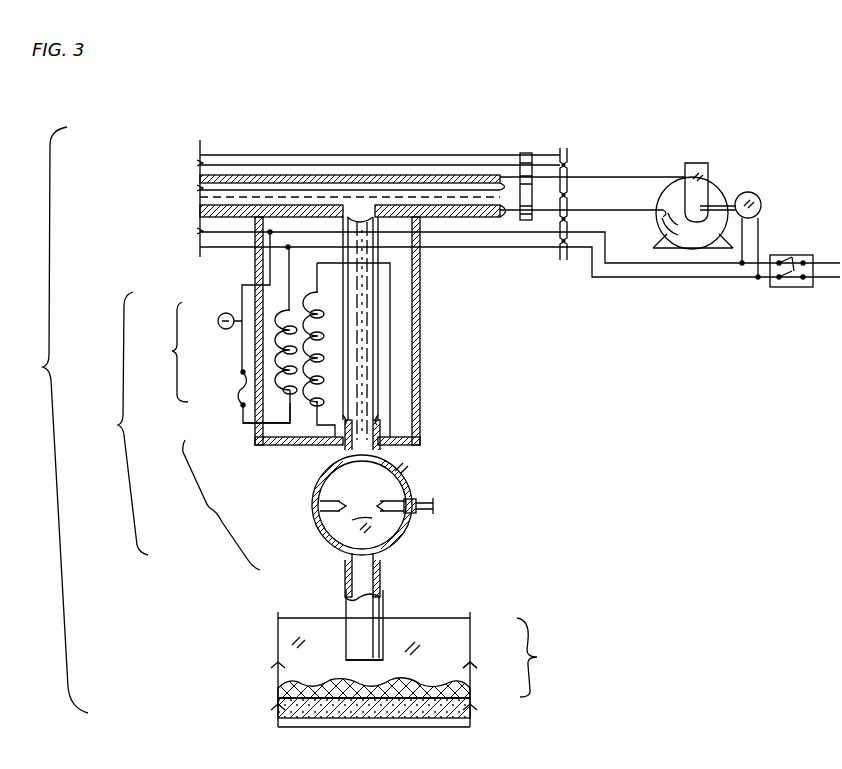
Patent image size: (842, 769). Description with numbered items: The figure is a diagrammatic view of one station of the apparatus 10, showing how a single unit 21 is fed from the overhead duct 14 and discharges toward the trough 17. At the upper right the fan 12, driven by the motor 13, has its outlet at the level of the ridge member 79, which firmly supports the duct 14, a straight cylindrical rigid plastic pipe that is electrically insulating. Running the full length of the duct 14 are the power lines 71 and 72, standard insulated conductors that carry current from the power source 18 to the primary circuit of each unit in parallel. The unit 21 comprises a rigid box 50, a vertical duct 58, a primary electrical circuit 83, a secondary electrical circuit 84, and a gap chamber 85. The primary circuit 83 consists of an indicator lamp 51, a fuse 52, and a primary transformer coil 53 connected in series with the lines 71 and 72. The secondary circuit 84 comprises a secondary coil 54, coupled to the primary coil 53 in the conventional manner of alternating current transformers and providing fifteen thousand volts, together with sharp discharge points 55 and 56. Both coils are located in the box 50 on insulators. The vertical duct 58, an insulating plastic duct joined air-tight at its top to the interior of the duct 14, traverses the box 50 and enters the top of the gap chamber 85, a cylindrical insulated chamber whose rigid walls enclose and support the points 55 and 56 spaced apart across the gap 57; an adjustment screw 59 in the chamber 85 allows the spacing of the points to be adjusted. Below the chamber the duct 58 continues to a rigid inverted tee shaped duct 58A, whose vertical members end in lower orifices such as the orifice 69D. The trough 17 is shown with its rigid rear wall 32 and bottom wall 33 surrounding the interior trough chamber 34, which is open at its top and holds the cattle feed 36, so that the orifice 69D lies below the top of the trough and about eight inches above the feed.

The embodiment of apparatus 10 is at (54, 420).
The fan 12 is at (718, 182).
The motor 13 is at (752, 192).
The duct 14 is at (200, 186).
The trough 17 is at (421, 669).
The power source 18 is at (790, 255).
The unit 21 is at (120, 423).
The rear or inside wall 32 is at (470, 668).
The bottom wall 33 is at (432, 712).
The interior trough chamber 34 is at (442, 645).
The cattle feed 36 is at (455, 690).
The rigid box 50 is at (420, 282).
The indicator lamp 51 is at (218, 316).
The fuse 52 is at (241, 373).
The primary transformer coil 53 is at (273, 340).
The secondary coil 54 is at (307, 403).
The sharp discharge point 55 is at (397, 540).
The sharp discharge point 56 is at (340, 500).
The gap 57 is at (350, 520).
The vertical duct 58 is at (370, 338).
The inverted tee shaped duct 58A is at (368, 623).
The adjustment screw 59 is at (436, 506).
The lower orifice 69D is at (360, 660).
The power line 71 is at (200, 232).
The power line 72 is at (207, 247).
The ridge member 79 is at (500, 162).
The primary electrical circuit 83 is at (161, 352).
The secondary electrical circuit 84 is at (216, 505).
The gap chamber 85 is at (345, 548).